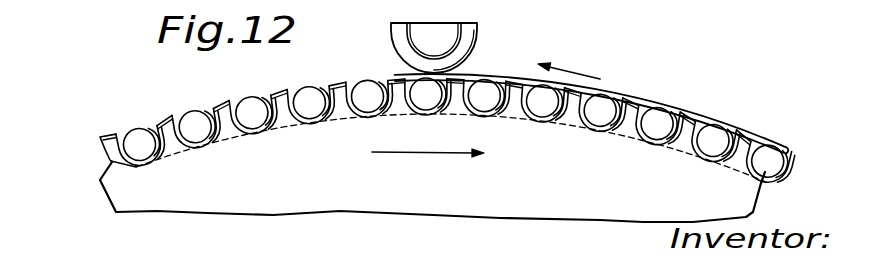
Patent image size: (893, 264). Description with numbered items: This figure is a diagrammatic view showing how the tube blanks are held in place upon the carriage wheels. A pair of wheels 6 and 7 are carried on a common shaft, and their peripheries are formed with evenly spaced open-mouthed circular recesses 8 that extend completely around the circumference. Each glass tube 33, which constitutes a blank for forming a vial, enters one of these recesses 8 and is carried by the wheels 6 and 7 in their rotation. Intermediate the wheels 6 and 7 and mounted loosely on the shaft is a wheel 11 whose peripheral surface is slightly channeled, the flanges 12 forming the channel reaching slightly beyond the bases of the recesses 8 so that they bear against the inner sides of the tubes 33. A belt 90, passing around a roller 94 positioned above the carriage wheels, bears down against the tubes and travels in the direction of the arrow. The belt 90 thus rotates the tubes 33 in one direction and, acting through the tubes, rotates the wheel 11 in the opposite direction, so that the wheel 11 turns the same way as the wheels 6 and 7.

The wheel 6 is at (103, 156).
The wheel 7 is at (112, 163).
The recesses 8 is at (231, 129).
The wheel 11 is at (344, 112).
The flanges 12 is at (634, 131).
The glass tubes 33 is at (255, 96).
The belt 90 is at (392, 42).
The roller 94 is at (478, 43).